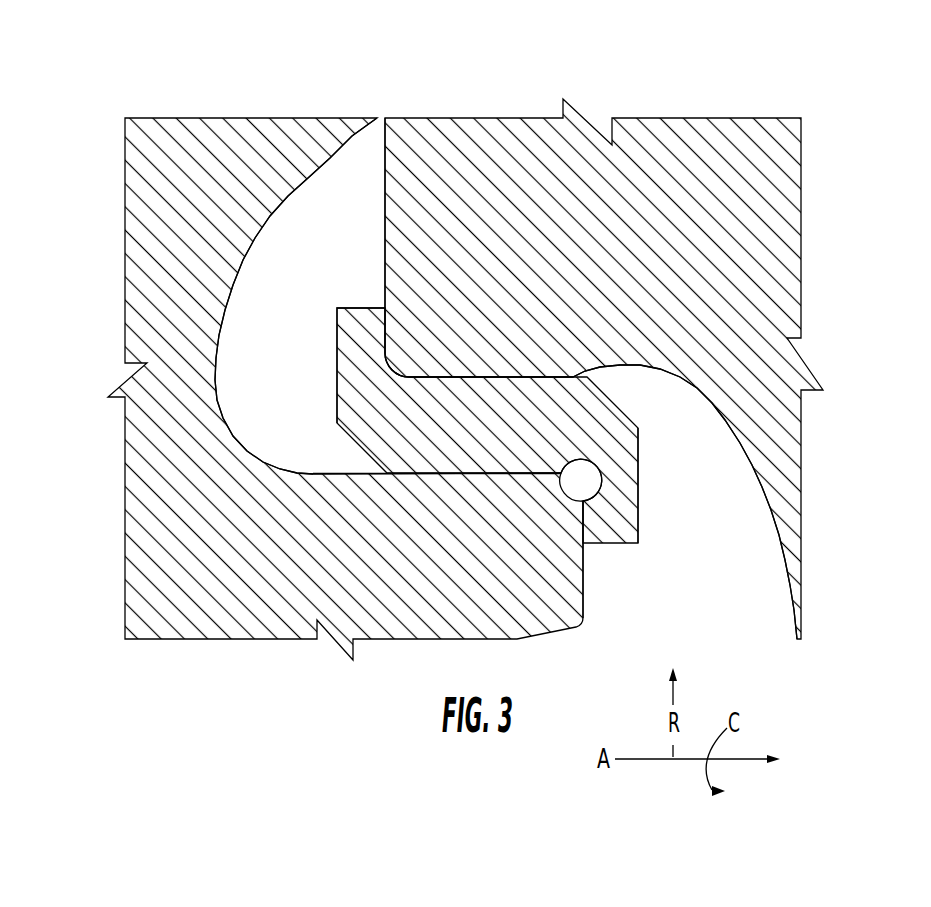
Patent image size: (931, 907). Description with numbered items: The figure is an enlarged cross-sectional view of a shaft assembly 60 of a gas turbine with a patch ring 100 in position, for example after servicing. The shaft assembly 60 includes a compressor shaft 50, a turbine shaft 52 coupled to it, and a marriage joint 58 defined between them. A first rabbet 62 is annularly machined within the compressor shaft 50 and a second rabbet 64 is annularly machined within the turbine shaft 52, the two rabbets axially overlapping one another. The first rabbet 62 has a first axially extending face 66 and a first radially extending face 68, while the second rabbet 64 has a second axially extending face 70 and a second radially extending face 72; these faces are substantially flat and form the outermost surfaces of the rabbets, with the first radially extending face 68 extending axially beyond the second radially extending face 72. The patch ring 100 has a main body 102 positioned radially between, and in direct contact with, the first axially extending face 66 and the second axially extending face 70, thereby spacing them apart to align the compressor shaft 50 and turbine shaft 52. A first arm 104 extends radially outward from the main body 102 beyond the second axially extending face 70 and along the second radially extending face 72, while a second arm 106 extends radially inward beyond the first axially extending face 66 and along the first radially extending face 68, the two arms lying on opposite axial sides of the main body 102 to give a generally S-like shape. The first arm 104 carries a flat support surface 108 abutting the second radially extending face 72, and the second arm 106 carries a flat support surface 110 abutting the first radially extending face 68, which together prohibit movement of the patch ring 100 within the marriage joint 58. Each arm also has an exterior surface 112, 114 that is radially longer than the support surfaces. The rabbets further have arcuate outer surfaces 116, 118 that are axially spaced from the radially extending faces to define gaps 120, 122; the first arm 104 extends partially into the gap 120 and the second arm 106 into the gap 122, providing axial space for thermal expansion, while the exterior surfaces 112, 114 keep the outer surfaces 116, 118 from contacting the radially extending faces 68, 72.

The compressor shaft 50 is at (322, 389).
The turbine shaft 52 is at (768, 323).
The marriage joint 58 is at (372, 535).
The shaft assembly 60 is at (448, 334).
The first rabbet 62 is at (322, 389).
The second rabbet 64 is at (620, 369).
The first axially extending face 66 is at (420, 477).
The first radially extending face 68 is at (583, 557).
The second axially extending face 70 is at (528, 377).
The second radially extending face 72 is at (385, 242).
The patch ring 100 is at (485, 389).
The main body 102 is at (485, 389).
The first arm 104 is at (337, 329).
The second arm 106 is at (613, 500).
The support surface 108 is at (392, 360).
The support surface 110 is at (587, 522).
The exterior surface 112 is at (337, 334).
The exterior surface 114 is at (638, 449).
The outer surface 116 is at (233, 272).
The outer surface 118 is at (777, 517).
The gap 120 is at (296, 296).
The gap 122 is at (685, 502).